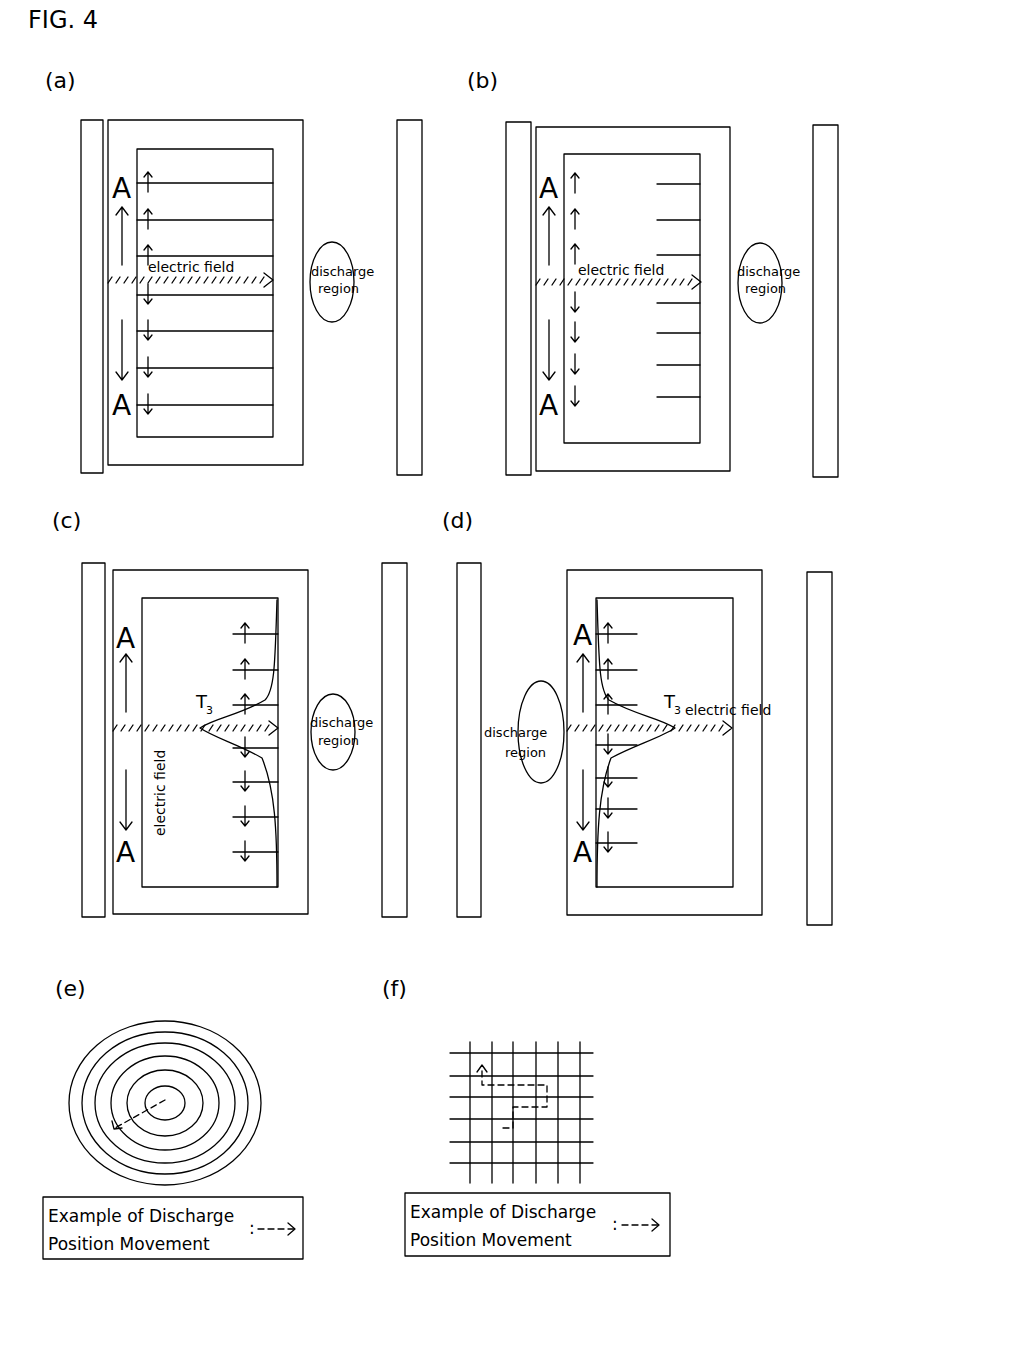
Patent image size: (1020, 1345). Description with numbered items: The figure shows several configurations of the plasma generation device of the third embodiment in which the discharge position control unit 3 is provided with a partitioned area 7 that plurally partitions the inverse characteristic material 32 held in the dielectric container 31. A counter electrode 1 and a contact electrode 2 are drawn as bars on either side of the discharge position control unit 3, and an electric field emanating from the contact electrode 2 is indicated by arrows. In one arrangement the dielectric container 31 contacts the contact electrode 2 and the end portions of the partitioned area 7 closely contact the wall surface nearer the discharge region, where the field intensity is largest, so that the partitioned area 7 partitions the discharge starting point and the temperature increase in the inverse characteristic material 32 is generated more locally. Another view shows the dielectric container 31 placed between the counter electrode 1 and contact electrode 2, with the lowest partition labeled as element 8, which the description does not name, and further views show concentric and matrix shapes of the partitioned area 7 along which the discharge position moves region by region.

The counter electrode 1 is at (408, 121).
The contact electrode 2 is at (92, 126).
The discharge position control unit 3 is at (461, 547).
The dielectric container 31 is at (284, 433).
The inverse characteristic material 32 is at (237, 423).
The partitioned area 7 is at (197, 183).
The additional electrode 8 is at (632, 843).